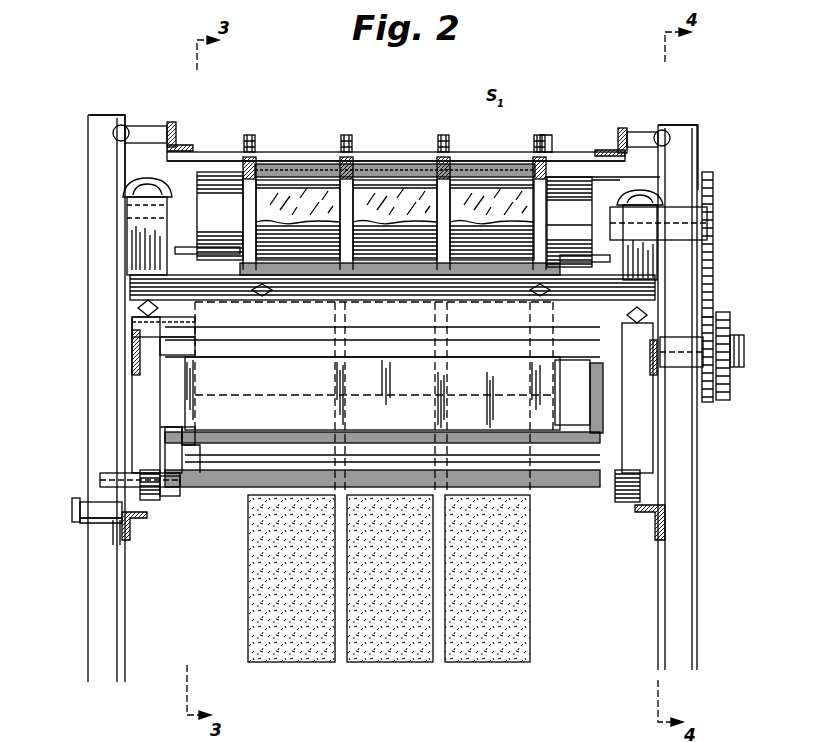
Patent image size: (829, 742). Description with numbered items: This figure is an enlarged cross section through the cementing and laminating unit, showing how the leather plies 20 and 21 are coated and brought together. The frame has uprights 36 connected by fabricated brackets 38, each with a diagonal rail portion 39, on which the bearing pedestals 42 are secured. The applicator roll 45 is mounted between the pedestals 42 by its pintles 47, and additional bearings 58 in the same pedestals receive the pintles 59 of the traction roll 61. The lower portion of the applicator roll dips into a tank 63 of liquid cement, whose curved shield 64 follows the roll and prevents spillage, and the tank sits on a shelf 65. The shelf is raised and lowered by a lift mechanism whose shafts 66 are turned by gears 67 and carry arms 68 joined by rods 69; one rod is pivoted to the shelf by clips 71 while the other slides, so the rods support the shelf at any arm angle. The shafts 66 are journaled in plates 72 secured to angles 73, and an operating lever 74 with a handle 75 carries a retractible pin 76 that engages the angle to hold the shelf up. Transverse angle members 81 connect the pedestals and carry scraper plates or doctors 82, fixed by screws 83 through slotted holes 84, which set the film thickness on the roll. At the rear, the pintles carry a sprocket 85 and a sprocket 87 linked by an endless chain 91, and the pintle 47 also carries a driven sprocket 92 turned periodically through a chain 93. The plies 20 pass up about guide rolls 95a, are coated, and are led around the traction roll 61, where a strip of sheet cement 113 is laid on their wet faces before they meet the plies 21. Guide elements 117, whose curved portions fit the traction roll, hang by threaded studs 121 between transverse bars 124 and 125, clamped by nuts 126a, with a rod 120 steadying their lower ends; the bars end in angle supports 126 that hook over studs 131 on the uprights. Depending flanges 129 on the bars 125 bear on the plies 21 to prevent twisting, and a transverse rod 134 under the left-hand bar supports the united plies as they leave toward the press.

The plies 20 is at (442, 660).
The plies 21 is at (405, 166).
The uprights 36 is at (90, 631).
The fabricated brackets 38 is at (140, 392).
The diagonal rail portion 39 is at (148, 422).
The bearing pedestals 42 is at (175, 252).
The applicator roll 45 is at (190, 338).
The pintles 47 is at (160, 336).
The additional bearings 58 is at (131, 196).
The pintles 59 is at (160, 212).
The traction roll 61 is at (394, 223).
The tank 63 is at (372, 393).
The curved shield 64 is at (556, 405).
The shelf 65 is at (182, 428).
The shafts 66 is at (218, 488).
The gears 67 is at (152, 500).
The arms 68 is at (165, 500).
The rods 69 is at (198, 446).
The clips 71 is at (188, 437).
The plates 72 is at (116, 540).
The angles 73 is at (136, 525).
The operating lever 74 is at (100, 480).
The handle 75 is at (96, 520).
The retractible pin 76 is at (73, 512).
The transverse angle members 81 is at (382, 396).
The scraper plates or doctors 82 is at (182, 267).
The screws 83 is at (278, 294).
The slotted holes 84 is at (266, 292).
The sprocket 85 is at (713, 306).
The sprocket 87 is at (713, 246).
The endless chain 91 is at (712, 180).
The driven sprocket 92 is at (736, 335).
The chain 93 is at (735, 396).
The guide rolls 95a is at (556, 490).
The sheet cement 113 is at (297, 192).
The guide elements 117 is at (547, 250).
The rod 120 is at (570, 247).
The threaded studs 121 is at (568, 140).
The transverse bars 124 is at (270, 160).
The transverse bars 125 is at (208, 162).
The angle supports 126 is at (172, 122).
The nuts 126a is at (368, 195).
The depending flanges 129 is at (222, 163).
The studs 131 is at (143, 125).
The transverse rod 134 is at (655, 180).